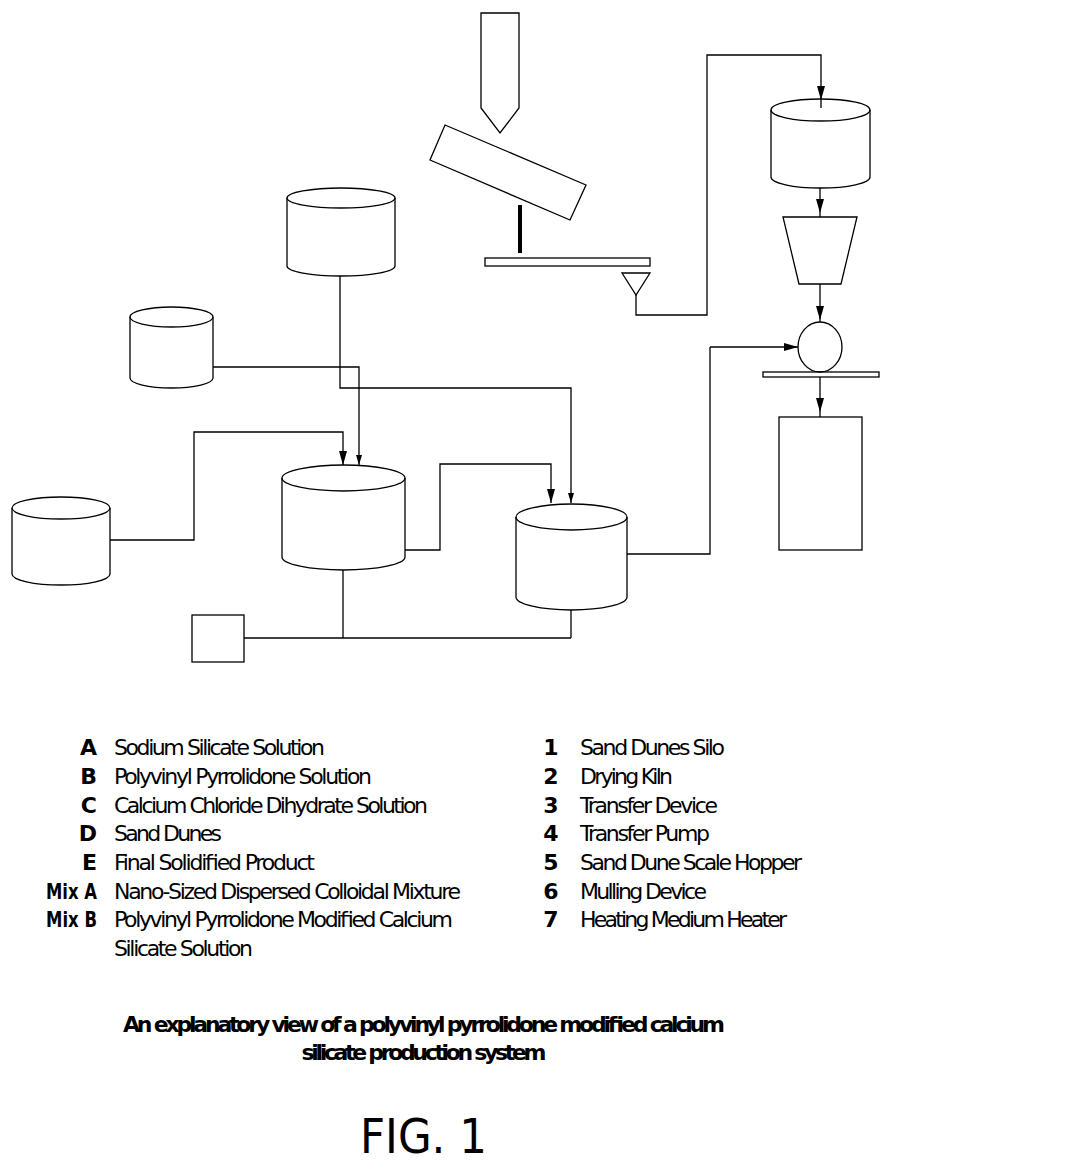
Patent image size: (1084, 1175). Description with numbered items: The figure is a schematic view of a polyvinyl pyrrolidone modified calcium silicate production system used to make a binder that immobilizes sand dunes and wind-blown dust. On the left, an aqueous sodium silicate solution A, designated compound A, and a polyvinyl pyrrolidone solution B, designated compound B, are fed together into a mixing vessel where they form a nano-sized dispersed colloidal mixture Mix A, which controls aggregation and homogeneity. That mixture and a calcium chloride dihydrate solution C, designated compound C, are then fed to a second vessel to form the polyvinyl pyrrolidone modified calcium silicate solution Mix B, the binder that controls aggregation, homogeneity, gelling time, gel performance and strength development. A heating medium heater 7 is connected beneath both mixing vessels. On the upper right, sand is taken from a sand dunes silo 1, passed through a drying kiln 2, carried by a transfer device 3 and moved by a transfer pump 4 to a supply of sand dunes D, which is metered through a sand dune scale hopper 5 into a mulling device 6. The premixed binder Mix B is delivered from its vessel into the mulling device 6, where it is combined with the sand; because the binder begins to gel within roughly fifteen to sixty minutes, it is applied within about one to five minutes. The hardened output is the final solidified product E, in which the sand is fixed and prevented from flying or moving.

The sand dunes silo 1 is at (500, 73).
The drying kiln 2 is at (508, 172).
The transfer device 3 is at (564, 235).
The transfer pump 4 is at (723, 185).
The sand dune scale hopper 5 is at (820, 269).
The mulling device 6 is at (794, 369).
The heating medium heater 7 is at (381, 638).
The sodium silicate solution A is at (179, 508).
The polyvinyl pyrrolidone solution B is at (246, 386).
The calcium chloride dihydrate solution C is at (430, 345).
The sand dunes D is at (820, 158).
The final solidified product E is at (820, 483).
The nano-sized dispersed colloidal mixture Mix A is at (418, 551).
The polyvinyl pyrrolidone modified calcium silicate solution Mix B is at (613, 492).